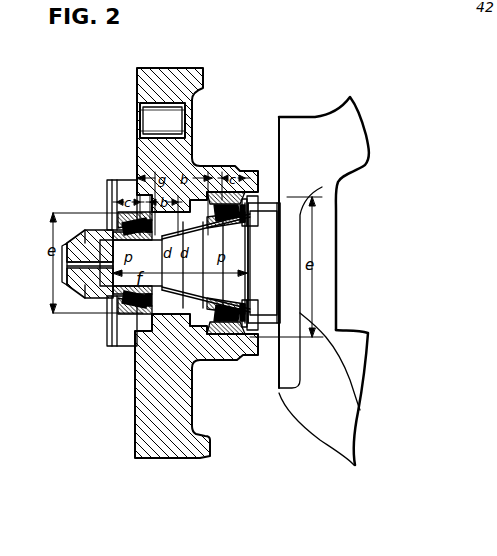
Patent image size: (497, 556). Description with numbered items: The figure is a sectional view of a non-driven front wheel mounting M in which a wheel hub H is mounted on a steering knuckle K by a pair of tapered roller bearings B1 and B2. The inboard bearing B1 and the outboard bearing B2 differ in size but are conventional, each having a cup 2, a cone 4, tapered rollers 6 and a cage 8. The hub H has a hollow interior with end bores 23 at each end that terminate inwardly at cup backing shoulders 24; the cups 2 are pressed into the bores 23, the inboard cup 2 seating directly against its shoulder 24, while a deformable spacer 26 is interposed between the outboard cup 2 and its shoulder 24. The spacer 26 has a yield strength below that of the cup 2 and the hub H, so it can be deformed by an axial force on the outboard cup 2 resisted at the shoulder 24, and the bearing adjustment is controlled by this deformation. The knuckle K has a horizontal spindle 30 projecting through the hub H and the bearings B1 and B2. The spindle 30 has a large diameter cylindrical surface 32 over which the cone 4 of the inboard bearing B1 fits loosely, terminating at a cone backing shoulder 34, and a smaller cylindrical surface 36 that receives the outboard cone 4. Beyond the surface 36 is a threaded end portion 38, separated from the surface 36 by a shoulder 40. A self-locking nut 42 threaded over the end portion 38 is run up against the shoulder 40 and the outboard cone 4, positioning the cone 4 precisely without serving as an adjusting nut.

The cup 2 is at (128, 320).
The cone 4 is at (239, 325).
The tapered rollers 6 is at (219, 323).
The cage 8 is at (105, 306).
The end bores 23 is at (112, 318).
The cup backing shoulders 24 is at (148, 316).
The deformable spacer 26 is at (145, 312).
The spindle 30 is at (262, 287).
The cylindrical surface 32 is at (233, 258).
The cone backing shoulder 34 is at (243, 238).
The cylindrical surface 36 is at (100, 308).
The threaded end portion 38 is at (76, 246).
The shoulder 40 is at (96, 296).
The nut 42 is at (96, 232).
The inboard bearing B1 is at (176, 265).
The outboard bearing B2 is at (105, 260).
The wheel hub H is at (171, 459).
The steering knuckle K is at (372, 360).
The front wheel mounting M is at (375, 241).